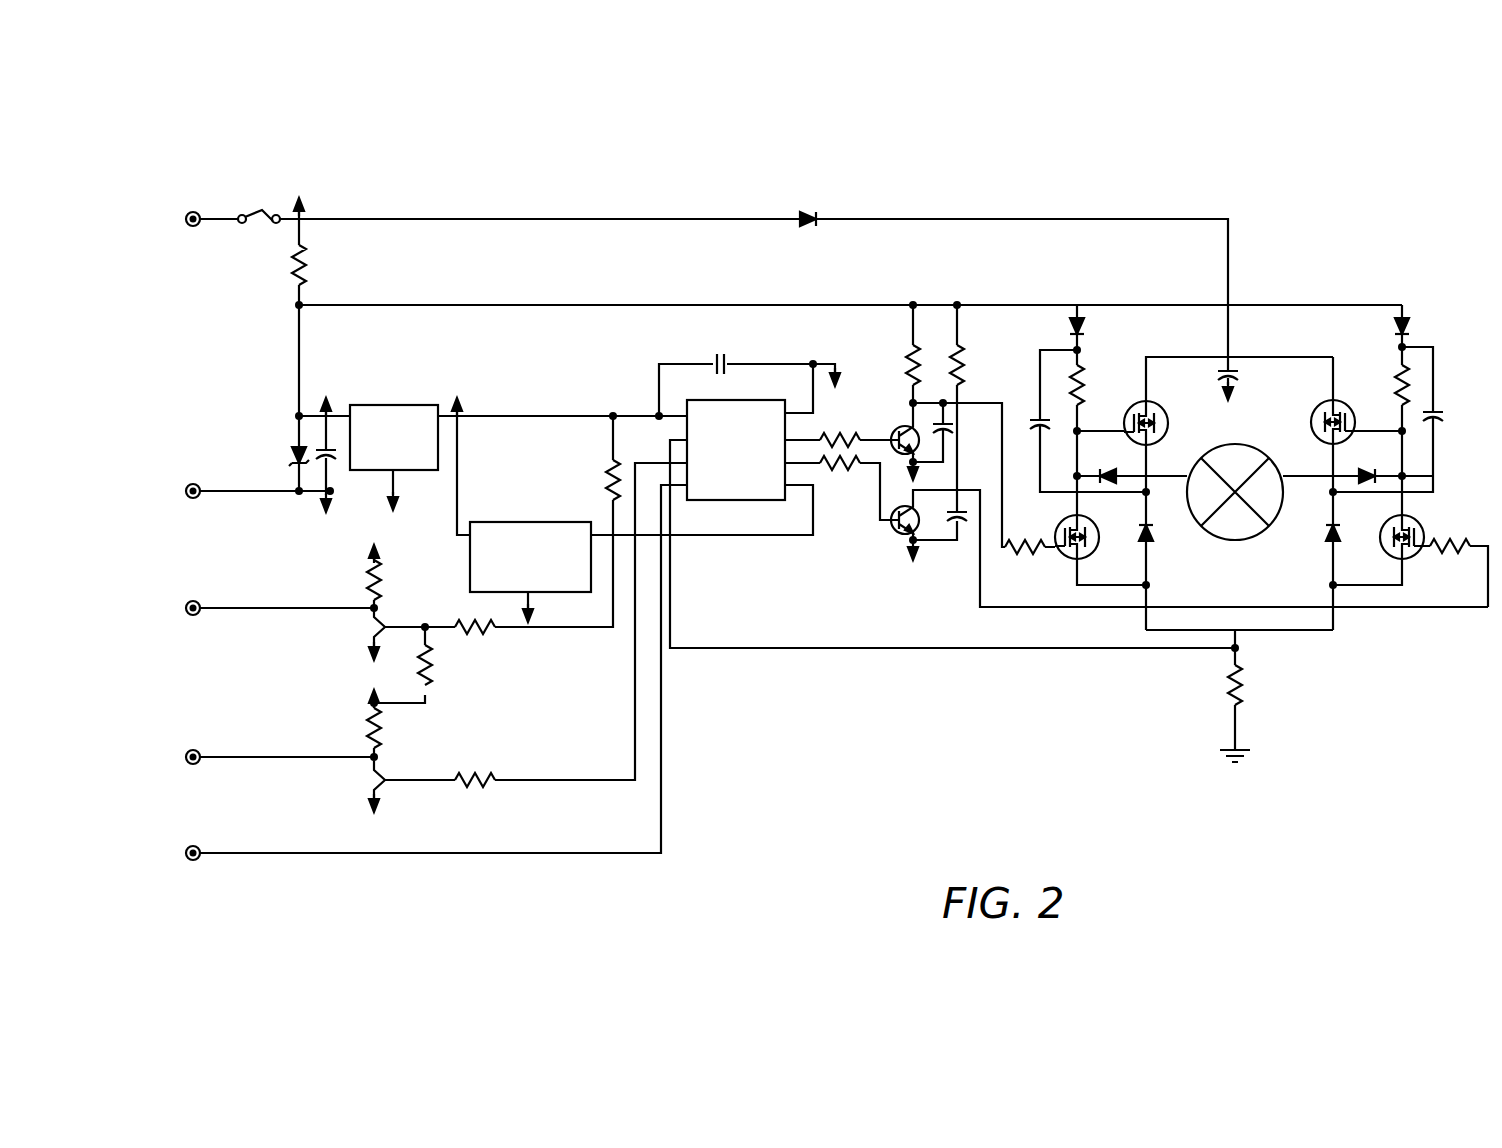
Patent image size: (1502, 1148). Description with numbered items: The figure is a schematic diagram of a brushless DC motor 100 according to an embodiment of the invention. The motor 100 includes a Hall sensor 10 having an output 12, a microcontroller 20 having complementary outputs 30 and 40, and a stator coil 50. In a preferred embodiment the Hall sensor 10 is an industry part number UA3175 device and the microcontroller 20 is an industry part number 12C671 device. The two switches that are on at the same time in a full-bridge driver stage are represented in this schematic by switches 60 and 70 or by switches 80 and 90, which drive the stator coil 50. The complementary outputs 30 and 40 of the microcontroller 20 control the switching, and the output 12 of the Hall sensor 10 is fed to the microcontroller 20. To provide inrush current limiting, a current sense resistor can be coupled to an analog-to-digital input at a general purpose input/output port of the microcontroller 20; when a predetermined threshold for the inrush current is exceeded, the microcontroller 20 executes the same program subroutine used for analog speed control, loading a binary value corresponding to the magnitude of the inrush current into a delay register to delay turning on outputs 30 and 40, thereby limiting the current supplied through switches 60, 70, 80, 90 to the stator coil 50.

The brushless DC motor 100 is at (800, 127).
The Hall sensor 10 is at (522, 522).
The output 12 is at (780, 536).
The microcontroller 20 is at (705, 500).
The complementary output 30 is at (820, 440).
The complementary output 40 is at (822, 466).
The stator coil 50 is at (1232, 540).
The switch 60 is at (1060, 560).
The switch 70 is at (1348, 405).
The switch 80 is at (1425, 530).
The switch 90 is at (1126, 405).